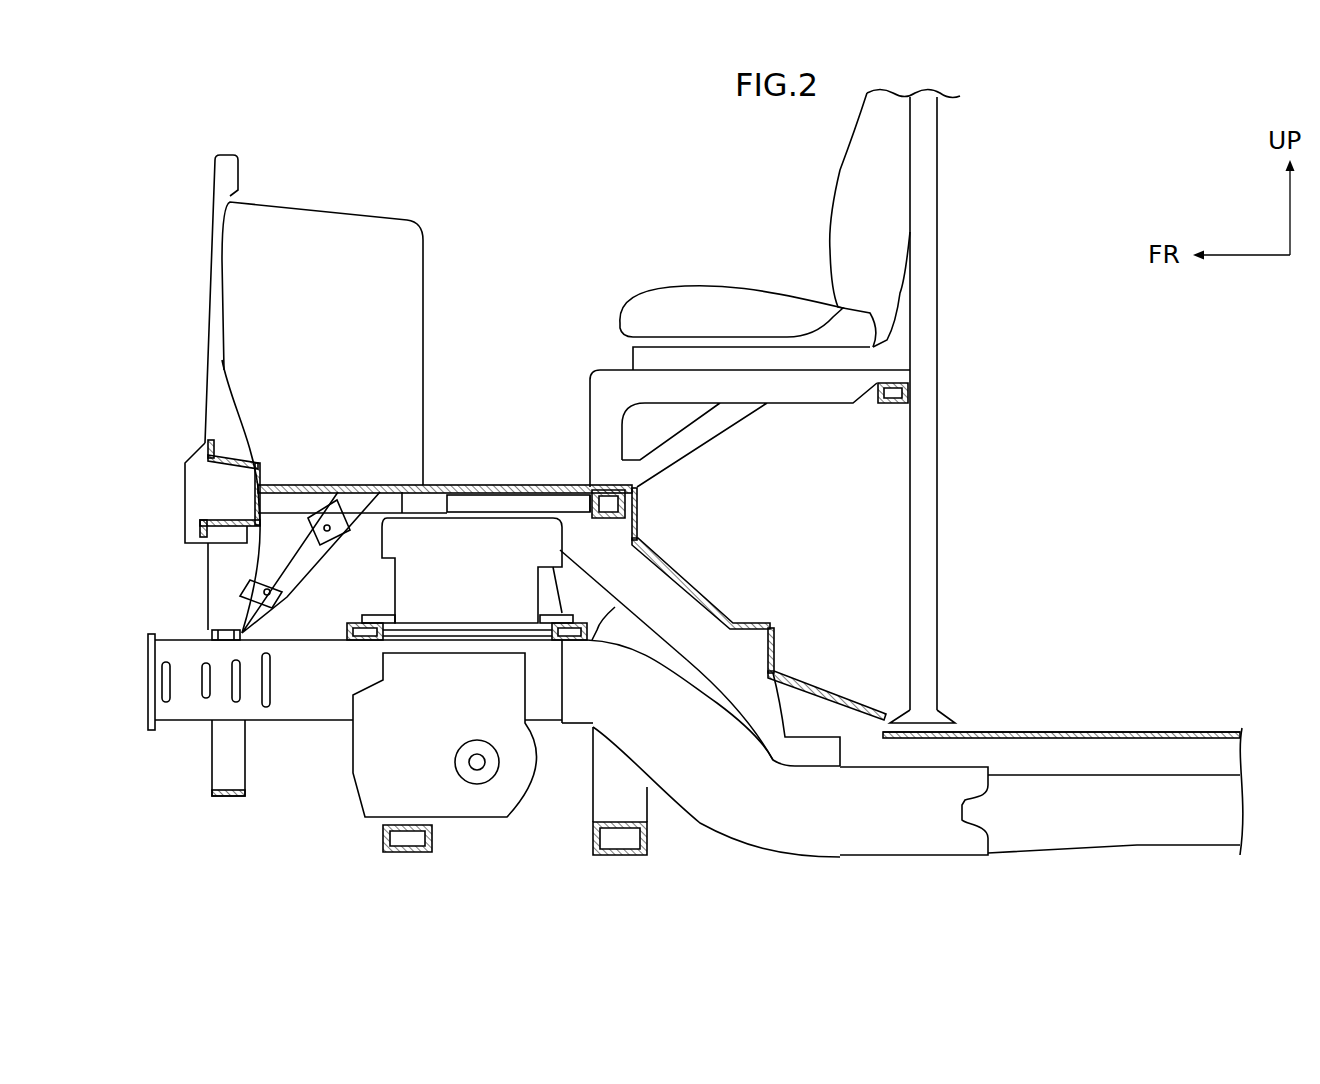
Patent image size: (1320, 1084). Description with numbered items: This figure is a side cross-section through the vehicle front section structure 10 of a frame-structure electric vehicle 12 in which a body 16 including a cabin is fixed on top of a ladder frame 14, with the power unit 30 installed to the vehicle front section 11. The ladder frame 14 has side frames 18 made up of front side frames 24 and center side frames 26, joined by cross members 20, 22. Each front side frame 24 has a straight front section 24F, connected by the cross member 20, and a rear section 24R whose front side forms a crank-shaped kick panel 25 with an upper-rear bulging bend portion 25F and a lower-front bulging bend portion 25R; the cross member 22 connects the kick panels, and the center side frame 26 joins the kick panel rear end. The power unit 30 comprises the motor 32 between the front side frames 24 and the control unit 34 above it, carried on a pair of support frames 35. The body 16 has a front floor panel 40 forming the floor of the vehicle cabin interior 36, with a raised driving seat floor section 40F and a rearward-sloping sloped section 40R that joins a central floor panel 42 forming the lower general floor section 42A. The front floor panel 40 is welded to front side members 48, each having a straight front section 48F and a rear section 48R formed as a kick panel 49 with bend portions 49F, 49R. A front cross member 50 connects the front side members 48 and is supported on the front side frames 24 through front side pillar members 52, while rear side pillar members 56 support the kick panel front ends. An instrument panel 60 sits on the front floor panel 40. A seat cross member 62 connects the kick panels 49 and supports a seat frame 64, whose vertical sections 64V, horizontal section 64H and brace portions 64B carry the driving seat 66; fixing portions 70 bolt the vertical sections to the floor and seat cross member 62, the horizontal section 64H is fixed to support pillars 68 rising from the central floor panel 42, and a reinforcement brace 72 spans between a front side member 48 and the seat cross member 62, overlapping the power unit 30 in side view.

The vehicle front section structure 10 is at (518, 248).
The vehicle front section 11 is at (452, 153).
The vehicle 12 is at (368, 125).
The ladder frame 14 is at (963, 872).
The body 16 is at (180, 407).
The side frame 18 is at (1078, 853).
The cross member 20 is at (380, 823).
The cross member 22 is at (613, 792).
The front side frame 24 is at (575, 707).
The front section 24F is at (303, 708).
The rear section 24R is at (703, 770).
The kick panel 25 is at (700, 699).
The bend portion 25F is at (627, 663).
The bend portion 25R is at (773, 833).
The center side frame 26 is at (1175, 827).
The power unit 30 is at (457, 600).
The motor 32 is at (473, 800).
The control unit 34 is at (420, 543).
The support frame 35 is at (357, 620).
The vehicle cabin interior 36 is at (1079, 342).
The front floor panel 40 is at (497, 480).
The driving seat floor section 40F is at (462, 487).
The sloped section 40R is at (740, 620).
The central floor panel 42 is at (1137, 728).
The general floor section 42A is at (1050, 730).
The front side member 48 is at (657, 598).
The front section 48F is at (363, 503).
The rear section 48R is at (660, 562).
The kick panel 49 is at (693, 638).
The bend portion 49F is at (617, 530).
The bend portion 49R is at (780, 750).
The front cross member 50 is at (225, 517).
The front side pillar member 52 is at (222, 570).
The rear side pillar member 56 is at (228, 765).
The instrument panel 60 is at (323, 207).
The seat cross member 62 is at (590, 502).
The seat frame 64 is at (833, 412).
The brace portion 64B is at (672, 448).
The vertical section 64V is at (597, 407).
The horizontal section 64H is at (805, 393).
The driving seat 66 is at (702, 268).
The support pillar 68 is at (923, 450).
The fixing portion 70 is at (583, 482).
The reinforcement brace 72 is at (517, 503).